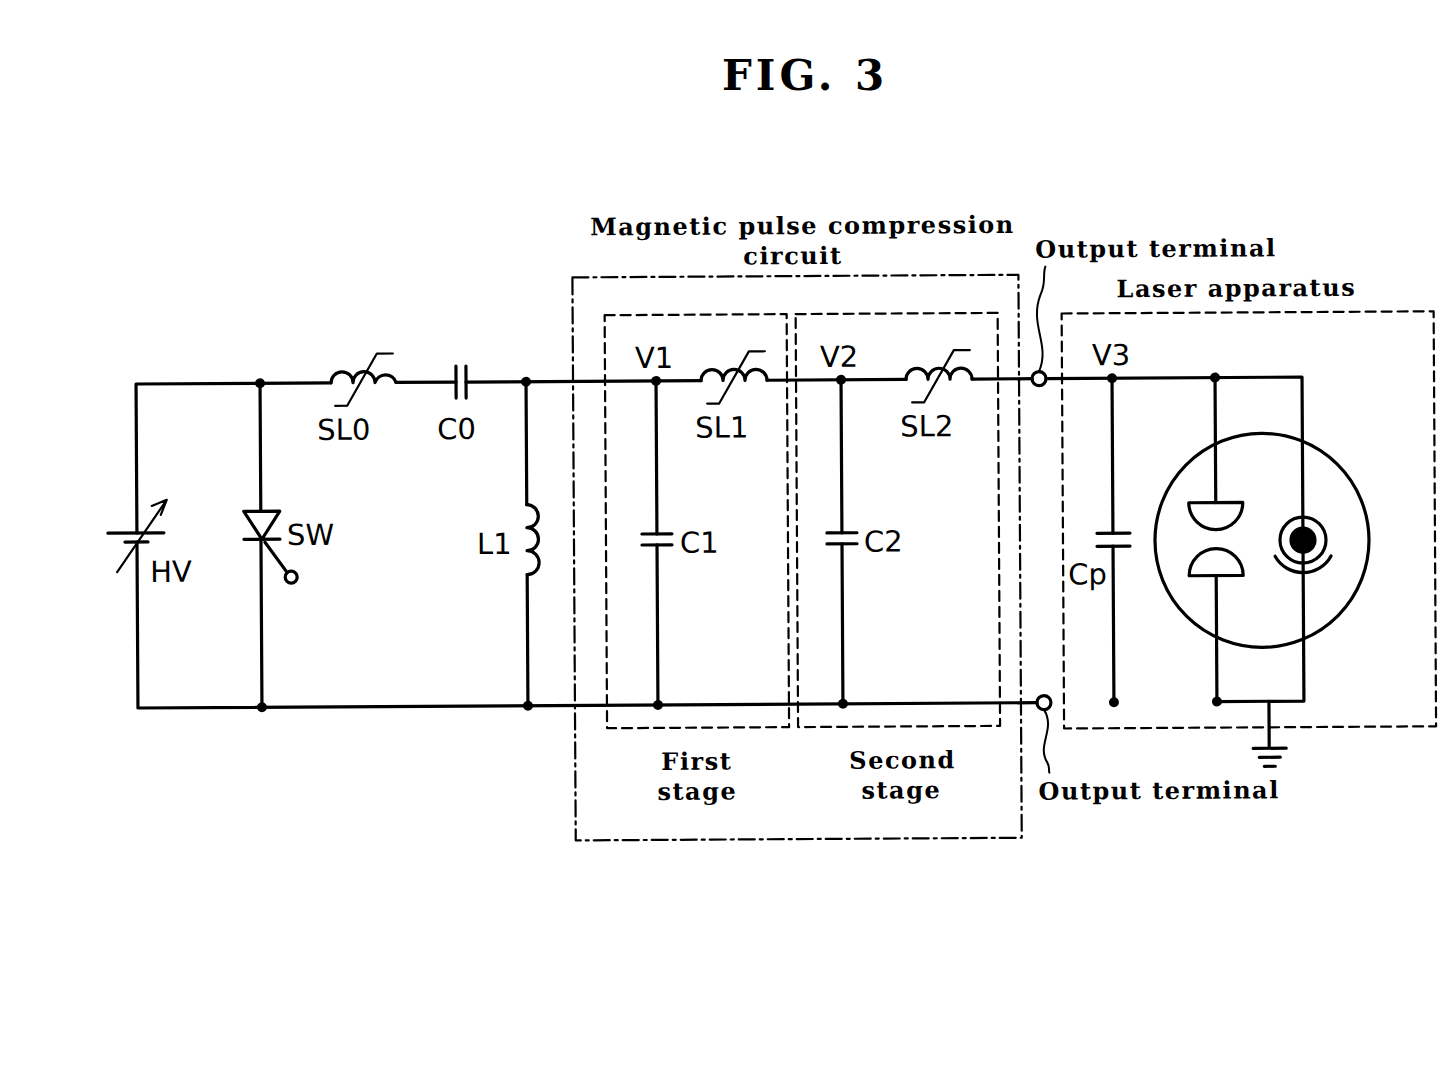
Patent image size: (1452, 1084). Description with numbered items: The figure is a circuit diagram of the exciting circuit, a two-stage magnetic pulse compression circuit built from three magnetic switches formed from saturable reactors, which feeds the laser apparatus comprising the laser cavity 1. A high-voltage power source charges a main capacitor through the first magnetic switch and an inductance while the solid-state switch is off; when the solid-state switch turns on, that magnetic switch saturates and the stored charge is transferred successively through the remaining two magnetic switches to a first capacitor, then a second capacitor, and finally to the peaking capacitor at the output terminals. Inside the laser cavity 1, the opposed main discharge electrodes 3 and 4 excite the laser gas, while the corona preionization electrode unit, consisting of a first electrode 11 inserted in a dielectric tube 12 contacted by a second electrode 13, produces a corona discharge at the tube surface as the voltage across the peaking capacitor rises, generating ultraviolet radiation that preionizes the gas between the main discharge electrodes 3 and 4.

The laser cavity 1 is at (1328, 462).
The main discharge electrode 3 is at (1244, 527).
The main discharge electrode 4 is at (1238, 563).
The first electrode 11 is at (1326, 527).
The tube 12 is at (1291, 527).
The second electrode 13 is at (1290, 580).